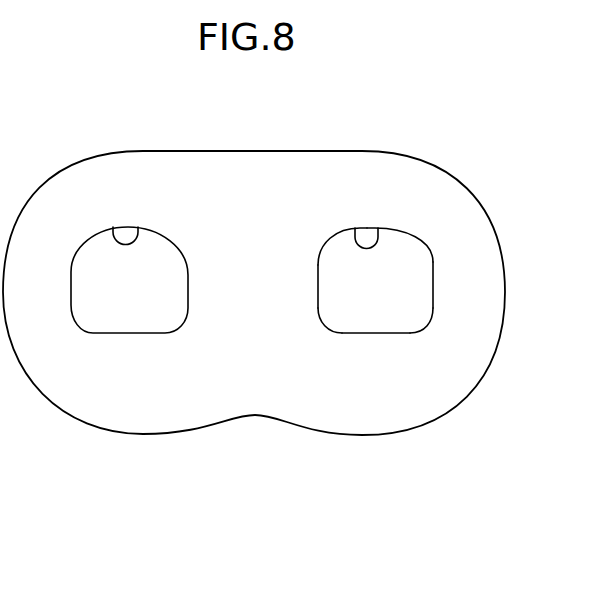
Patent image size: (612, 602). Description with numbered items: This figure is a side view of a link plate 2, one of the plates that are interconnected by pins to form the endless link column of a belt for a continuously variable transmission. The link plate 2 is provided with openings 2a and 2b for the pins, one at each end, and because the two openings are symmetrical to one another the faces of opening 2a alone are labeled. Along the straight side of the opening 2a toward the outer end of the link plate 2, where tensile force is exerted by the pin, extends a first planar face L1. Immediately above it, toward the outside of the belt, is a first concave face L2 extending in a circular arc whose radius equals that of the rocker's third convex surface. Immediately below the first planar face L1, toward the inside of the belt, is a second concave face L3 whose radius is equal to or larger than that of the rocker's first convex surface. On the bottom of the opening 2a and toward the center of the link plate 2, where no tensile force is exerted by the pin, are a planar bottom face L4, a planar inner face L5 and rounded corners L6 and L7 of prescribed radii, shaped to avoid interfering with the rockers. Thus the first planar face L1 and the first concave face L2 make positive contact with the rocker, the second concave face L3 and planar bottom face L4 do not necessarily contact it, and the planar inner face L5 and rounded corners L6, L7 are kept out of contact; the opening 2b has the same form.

The link plate 2 is at (313, 163).
The opening 2a is at (378, 228).
The opening 2b is at (136, 228).
The first planar face L1 is at (435, 259).
The first concave face L2 is at (435, 253).
The second concave face L3 is at (434, 306).
The planar bottom face L4 is at (413, 338).
The planar inner face L5 is at (316, 264).
The rounded corner L6 is at (376, 226).
The rounded corner L7 is at (317, 312).